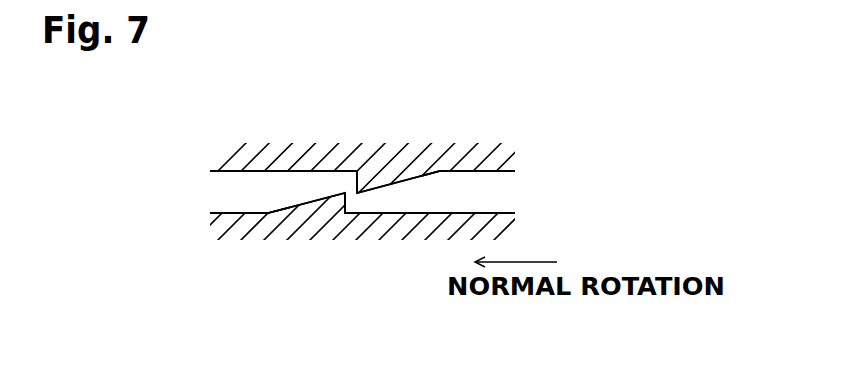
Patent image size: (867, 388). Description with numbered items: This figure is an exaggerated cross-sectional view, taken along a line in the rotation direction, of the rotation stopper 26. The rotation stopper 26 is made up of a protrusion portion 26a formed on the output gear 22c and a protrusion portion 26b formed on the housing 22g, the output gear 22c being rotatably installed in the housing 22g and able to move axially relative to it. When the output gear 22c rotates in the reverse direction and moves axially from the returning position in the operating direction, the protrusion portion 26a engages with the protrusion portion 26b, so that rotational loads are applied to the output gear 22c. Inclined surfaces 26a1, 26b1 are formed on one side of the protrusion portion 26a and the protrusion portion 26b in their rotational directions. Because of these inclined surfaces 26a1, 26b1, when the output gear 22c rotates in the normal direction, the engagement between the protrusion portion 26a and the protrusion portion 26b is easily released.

The rotation stopper 26 is at (348, 190).
The housing 22g is at (502, 158).
The output gear 22c is at (372, 230).
The protrusion portion 26a is at (344, 198).
The inclined surface 26a1 is at (283, 207).
The protrusion portion 26b is at (362, 189).
The inclined surface 26b1 is at (436, 174).